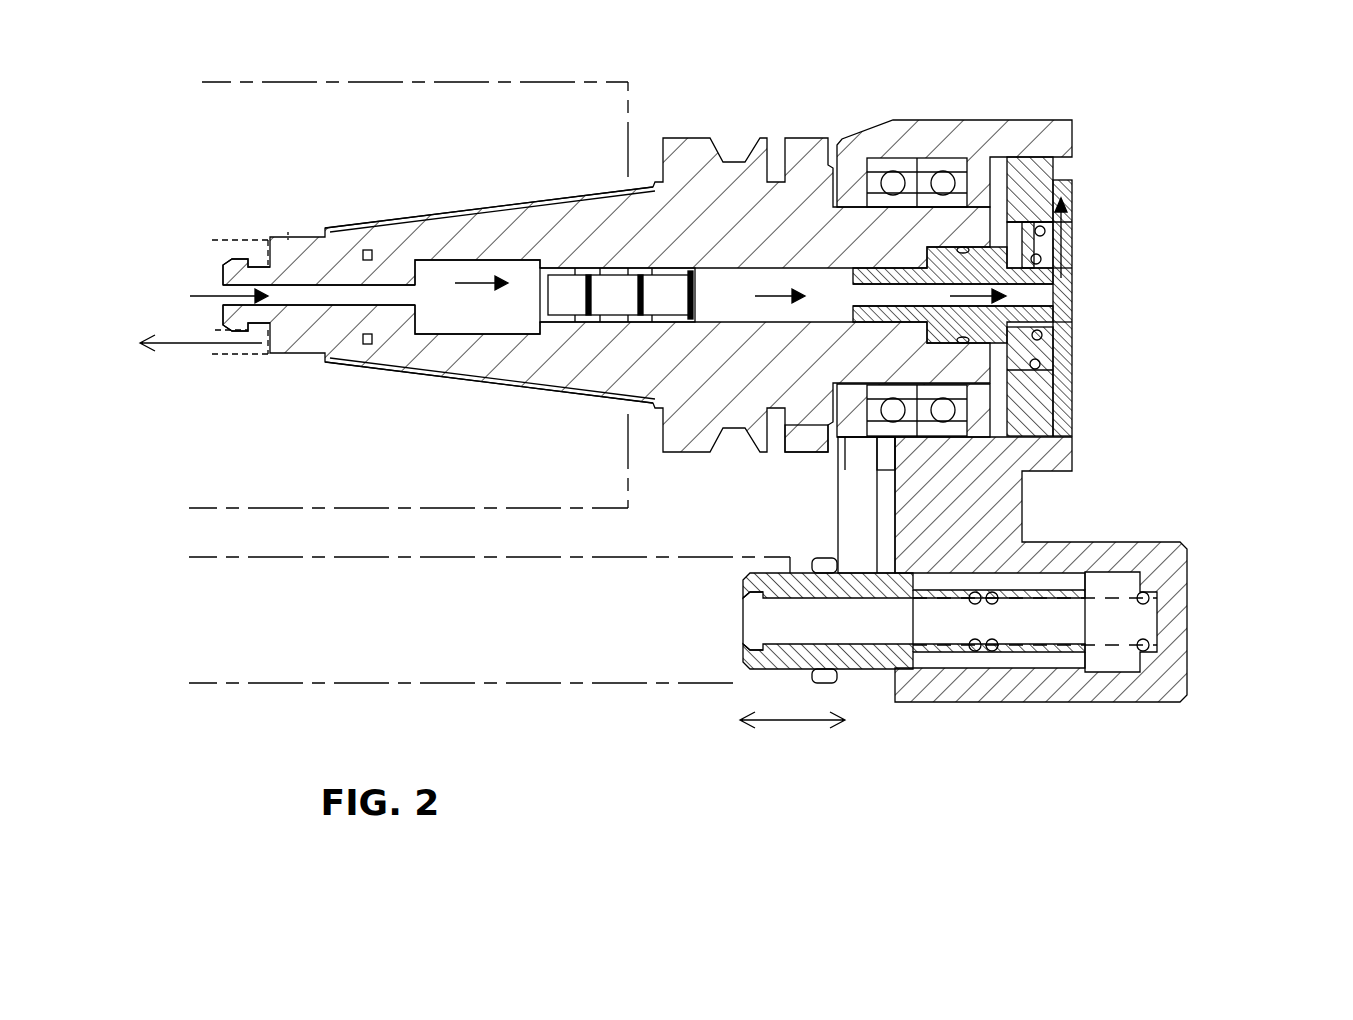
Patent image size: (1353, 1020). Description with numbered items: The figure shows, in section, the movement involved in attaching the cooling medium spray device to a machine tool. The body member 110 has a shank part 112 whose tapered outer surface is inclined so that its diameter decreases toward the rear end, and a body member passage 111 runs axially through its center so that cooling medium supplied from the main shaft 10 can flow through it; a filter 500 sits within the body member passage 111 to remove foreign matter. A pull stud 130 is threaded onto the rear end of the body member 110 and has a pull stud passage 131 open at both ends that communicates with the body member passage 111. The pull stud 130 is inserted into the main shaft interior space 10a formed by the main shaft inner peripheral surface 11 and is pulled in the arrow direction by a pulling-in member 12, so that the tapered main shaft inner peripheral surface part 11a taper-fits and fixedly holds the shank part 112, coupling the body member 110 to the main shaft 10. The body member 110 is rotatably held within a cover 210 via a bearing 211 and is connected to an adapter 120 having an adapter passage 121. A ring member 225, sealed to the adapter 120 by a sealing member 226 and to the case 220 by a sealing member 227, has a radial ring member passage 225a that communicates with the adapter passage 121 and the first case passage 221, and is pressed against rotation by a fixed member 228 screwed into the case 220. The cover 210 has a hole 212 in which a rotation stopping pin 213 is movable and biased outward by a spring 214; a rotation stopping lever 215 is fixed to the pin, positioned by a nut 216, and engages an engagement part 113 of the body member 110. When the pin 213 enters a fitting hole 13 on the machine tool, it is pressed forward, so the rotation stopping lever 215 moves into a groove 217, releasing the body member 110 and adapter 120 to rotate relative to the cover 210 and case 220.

The main shaft 10 is at (243, 158).
The main shaft interior space 10a is at (284, 256).
The main shaft inner peripheral surface 11 is at (232, 236).
The main shaft inner peripheral surface part 11a is at (405, 212).
The pulling-in member 12 is at (240, 343).
The fitting hole 13 is at (740, 570).
The body member 110 is at (608, 237).
The body member passage 111 is at (510, 307).
The shank part 112 is at (395, 225).
The engagement part 113 is at (806, 444).
The adapter 120 is at (940, 250).
The adapter passage 121 is at (927, 290).
The pull stud 130 is at (328, 318).
The pull stud passage 131 is at (351, 290).
The cover 210 is at (990, 128).
The bearing 211 is at (938, 168).
The hole 212 is at (1113, 612).
The rotation stopping pin 213 is at (945, 652).
The spring 214 is at (1030, 648).
The rotation stopping lever 215 is at (858, 512).
The nut 216 is at (820, 562).
The groove 217 is at (882, 446).
The case 220 is at (1037, 172).
The first case passage 221 is at (1066, 183).
The ring member 225 is at (1035, 350).
The ring member passage 225a is at (1054, 250).
The sealing member 226 is at (1042, 335).
The sealing member 227 is at (1015, 372).
The fixed member 228 is at (1020, 248).
The filter 500 is at (660, 303).